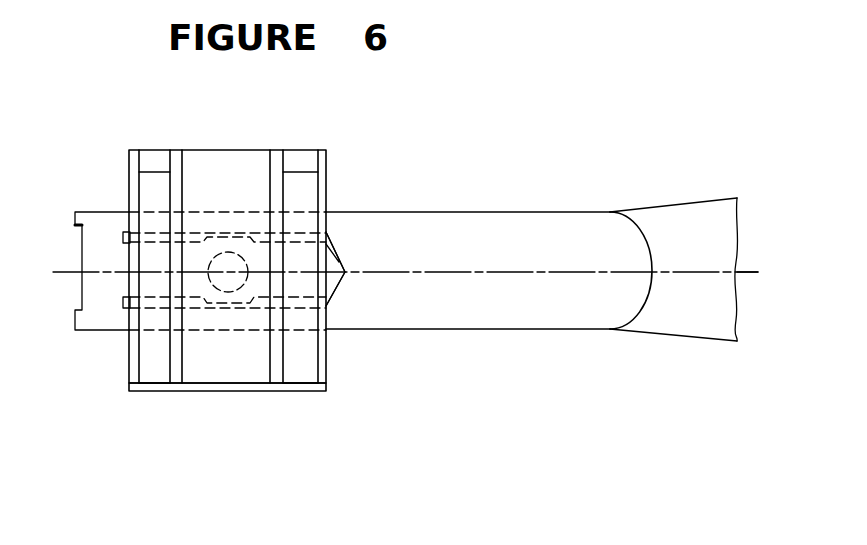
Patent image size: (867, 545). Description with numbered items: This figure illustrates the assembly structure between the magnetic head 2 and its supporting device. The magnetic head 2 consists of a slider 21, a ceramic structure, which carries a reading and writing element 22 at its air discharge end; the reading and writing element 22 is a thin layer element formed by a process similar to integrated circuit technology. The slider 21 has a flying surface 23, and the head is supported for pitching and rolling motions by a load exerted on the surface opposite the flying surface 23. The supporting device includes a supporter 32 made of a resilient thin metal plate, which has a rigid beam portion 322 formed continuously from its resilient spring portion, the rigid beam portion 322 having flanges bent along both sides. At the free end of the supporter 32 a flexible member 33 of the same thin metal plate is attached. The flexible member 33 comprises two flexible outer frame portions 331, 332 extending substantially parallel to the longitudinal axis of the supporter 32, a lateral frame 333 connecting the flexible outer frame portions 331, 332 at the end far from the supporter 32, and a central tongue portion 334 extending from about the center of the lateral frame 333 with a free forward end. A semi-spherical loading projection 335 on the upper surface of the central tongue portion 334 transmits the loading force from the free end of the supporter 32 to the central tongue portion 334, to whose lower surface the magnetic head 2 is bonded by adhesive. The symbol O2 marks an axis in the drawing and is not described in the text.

The magnetic head 2 is at (197, 391).
The slider 21 is at (228, 363).
The reading and writing element 22 is at (154, 391).
The flying surface 23 is at (152, 372).
The supporter 32 is at (637, 208).
The rigid beam portion 322 is at (652, 312).
The flexible member 33 is at (422, 230).
The flexible outer frame portion 331 is at (190, 218).
The flexible outer frame portion 332 is at (212, 320).
The lateral frame 333 is at (100, 295).
The central tongue portion 334 is at (327, 280).
The loading projection 335 is at (247, 278).
The oxygen O2 is at (745, 270).